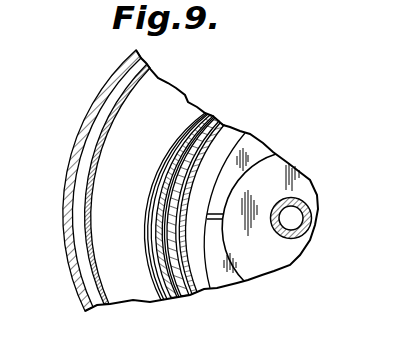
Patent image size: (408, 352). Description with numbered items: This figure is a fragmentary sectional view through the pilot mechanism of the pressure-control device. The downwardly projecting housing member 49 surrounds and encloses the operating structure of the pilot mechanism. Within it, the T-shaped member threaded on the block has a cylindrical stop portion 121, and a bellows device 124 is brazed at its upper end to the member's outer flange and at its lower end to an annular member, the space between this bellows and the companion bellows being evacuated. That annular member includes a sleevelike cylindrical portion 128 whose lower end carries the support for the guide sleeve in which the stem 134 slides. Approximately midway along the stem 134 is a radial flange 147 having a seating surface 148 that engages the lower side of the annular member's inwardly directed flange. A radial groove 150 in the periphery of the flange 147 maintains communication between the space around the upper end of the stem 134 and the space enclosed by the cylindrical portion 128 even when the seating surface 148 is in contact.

The housing member 49 is at (78, 147).
The bellows device 124 is at (88, 254).
The cylindrical stop portion 121 is at (172, 248).
The cylindrical portion 128 is at (183, 284).
The radial groove 150 is at (188, 263).
The seating surface 148 is at (243, 156).
The radial flange 147 is at (297, 177).
The stem 134 is at (311, 213).